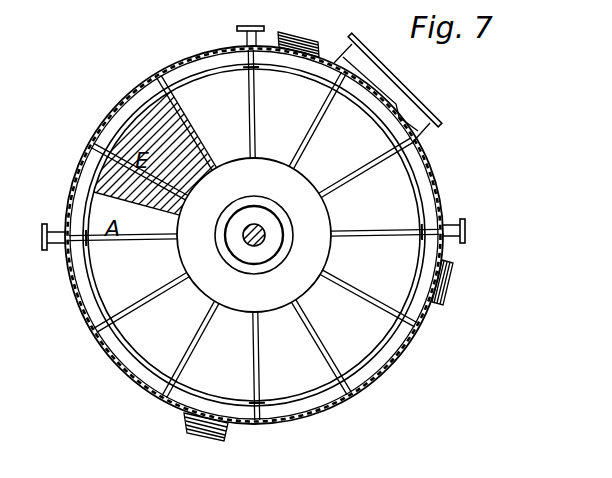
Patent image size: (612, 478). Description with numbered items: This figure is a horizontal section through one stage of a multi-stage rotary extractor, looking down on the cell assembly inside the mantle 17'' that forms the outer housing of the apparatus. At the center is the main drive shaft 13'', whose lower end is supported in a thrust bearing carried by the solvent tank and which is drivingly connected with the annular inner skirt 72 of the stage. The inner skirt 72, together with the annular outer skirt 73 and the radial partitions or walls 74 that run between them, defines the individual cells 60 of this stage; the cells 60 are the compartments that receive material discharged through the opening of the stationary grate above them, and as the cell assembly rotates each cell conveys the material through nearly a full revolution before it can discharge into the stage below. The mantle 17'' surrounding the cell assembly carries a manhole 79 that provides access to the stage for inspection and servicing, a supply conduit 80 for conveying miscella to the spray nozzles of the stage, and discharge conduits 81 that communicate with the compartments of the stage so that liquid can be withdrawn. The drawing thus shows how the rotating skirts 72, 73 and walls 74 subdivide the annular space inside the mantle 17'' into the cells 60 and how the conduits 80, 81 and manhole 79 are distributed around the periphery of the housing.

The main drive shaft 13'' is at (271, 217).
The mantle 17'' is at (258, 235).
The cells 60 is at (395, 172).
The annular inner skirts 72 is at (329, 215).
The annular outer skirts 73 is at (362, 370).
The radial partitions or walls 74 is at (364, 289).
The manholes 79 is at (412, 92).
The supply conduits 80 is at (238, 33).
The discharge conduits 81 is at (55, 228).